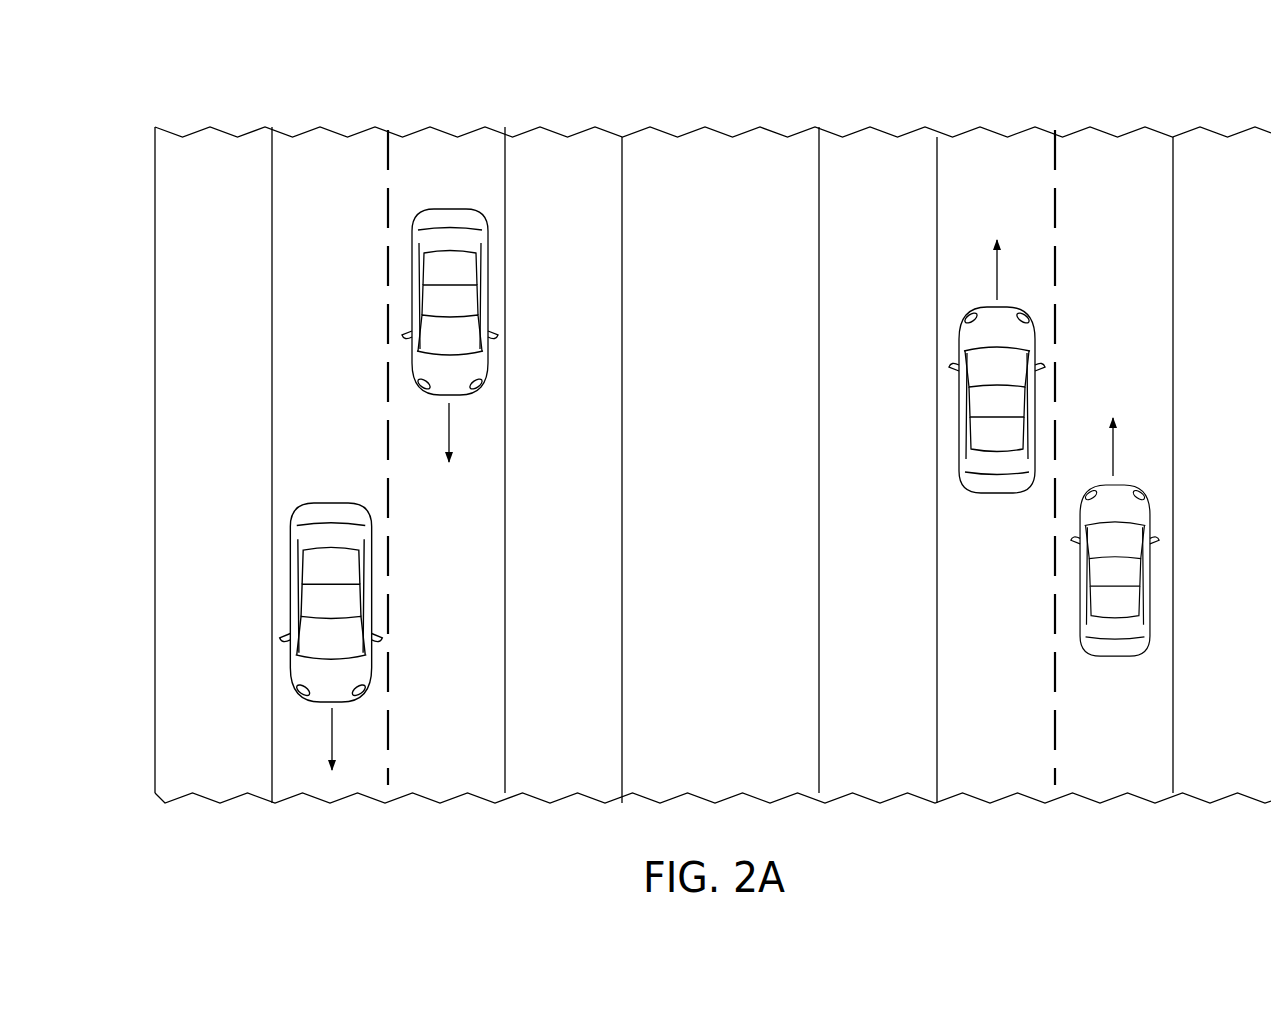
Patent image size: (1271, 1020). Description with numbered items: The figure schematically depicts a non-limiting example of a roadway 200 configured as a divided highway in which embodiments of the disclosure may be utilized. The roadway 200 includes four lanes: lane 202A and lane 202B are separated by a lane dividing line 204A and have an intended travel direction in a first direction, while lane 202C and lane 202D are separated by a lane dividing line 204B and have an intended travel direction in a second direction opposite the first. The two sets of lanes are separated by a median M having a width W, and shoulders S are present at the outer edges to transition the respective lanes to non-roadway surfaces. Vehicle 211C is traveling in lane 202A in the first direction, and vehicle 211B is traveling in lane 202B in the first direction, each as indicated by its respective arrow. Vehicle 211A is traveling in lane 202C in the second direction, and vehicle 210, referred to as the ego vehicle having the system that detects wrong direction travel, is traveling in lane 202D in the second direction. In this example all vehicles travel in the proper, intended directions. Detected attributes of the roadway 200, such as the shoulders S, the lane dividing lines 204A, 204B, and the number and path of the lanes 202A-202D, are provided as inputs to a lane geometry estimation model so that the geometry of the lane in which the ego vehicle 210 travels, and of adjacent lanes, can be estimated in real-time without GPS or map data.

The roadway 200 is at (642, 416).
The lane 202A is at (330, 140).
The lane 202B is at (442, 140).
The lane 202C is at (999, 140).
The lane 202D is at (1116, 140).
The lane dividing line 204A is at (386, 208).
The lane dividing line 204B is at (1058, 208).
The ego vehicle 210 is at (1154, 552).
The vehicle 211A is at (1040, 366).
The vehicle 211B is at (488, 335).
The vehicle 211C is at (293, 612).
The shoulder S is at (215, 140).
The median M is at (742, 108).
The width W is at (817, 466).